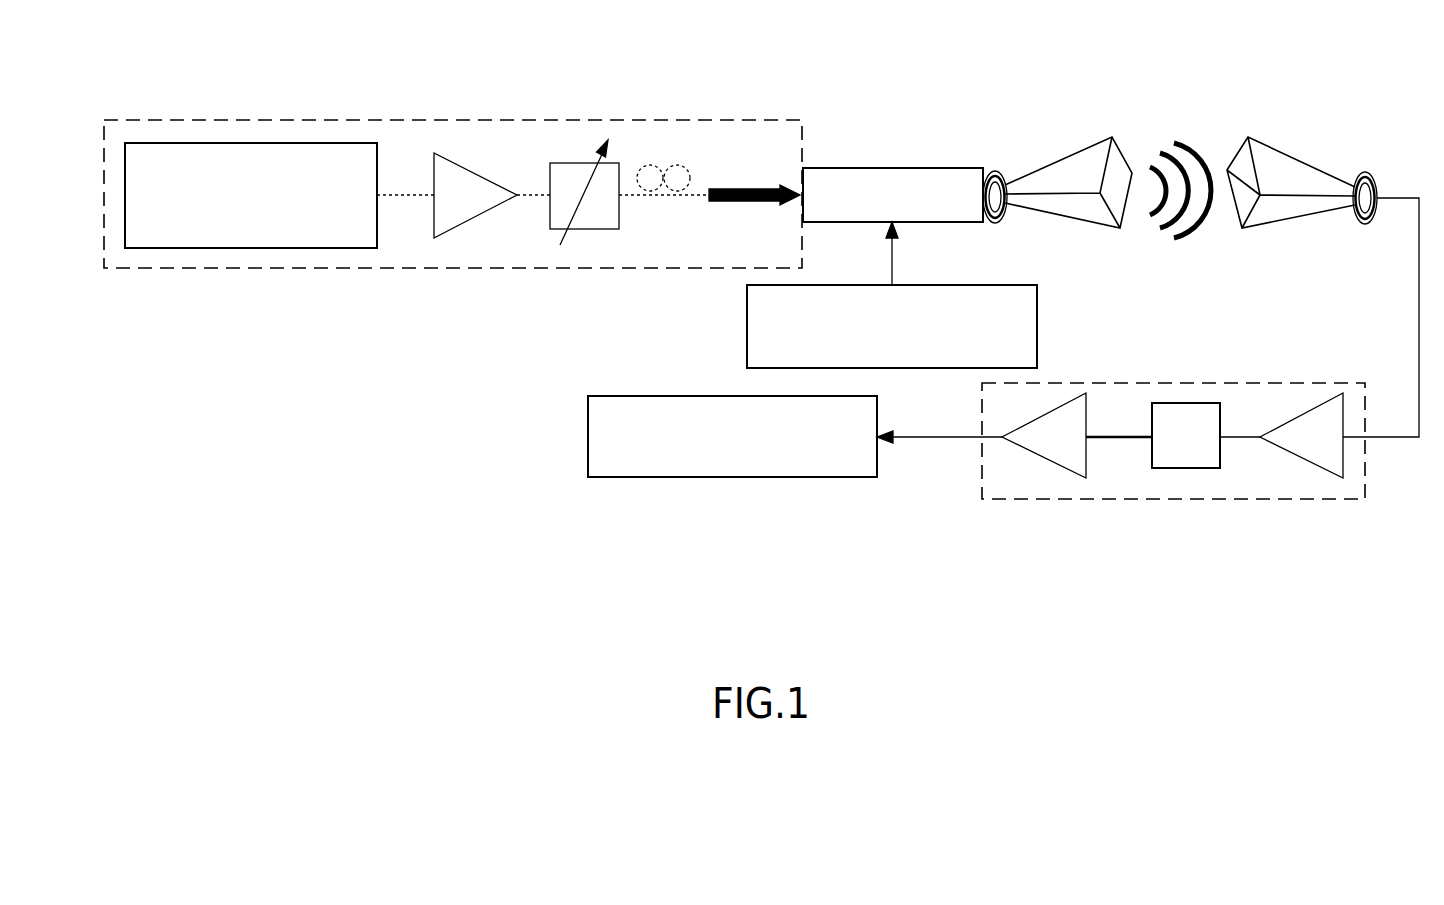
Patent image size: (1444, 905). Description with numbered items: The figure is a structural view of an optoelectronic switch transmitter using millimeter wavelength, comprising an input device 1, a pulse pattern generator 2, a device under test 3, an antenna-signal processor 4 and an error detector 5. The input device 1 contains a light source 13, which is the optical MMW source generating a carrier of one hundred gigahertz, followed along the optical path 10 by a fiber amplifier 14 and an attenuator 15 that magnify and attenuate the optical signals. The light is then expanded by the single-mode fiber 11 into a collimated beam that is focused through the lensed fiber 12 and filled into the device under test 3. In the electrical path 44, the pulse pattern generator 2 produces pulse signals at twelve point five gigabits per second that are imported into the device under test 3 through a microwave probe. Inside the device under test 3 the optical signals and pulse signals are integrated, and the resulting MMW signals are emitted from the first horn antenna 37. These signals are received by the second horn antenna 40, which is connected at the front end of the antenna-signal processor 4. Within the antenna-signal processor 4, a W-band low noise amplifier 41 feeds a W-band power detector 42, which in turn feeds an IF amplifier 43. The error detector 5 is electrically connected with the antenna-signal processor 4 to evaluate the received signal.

The input device 1 is at (153, 119).
The pulse pattern generator 2 is at (747, 330).
The device under test 3 is at (892, 167).
The antenna-signal processor 4 is at (1240, 500).
The error detector 5 is at (588, 437).
The optical path 10 is at (404, 168).
The single-mode fiber 11 is at (673, 166).
The lensed fiber 12 is at (750, 186).
The light source 13 is at (250, 143).
The fiber amplifier 14 is at (434, 150).
The attenuator 15 is at (560, 162).
The first horn antenna 37 is at (1063, 158).
The second horn antenna 40 is at (1307, 158).
The W-band low noise amplifier 41 is at (1343, 478).
The W-band power detector 42 is at (1185, 468).
The IF amplifier 43 is at (1086, 478).
The electrical path 44 is at (1411, 170).